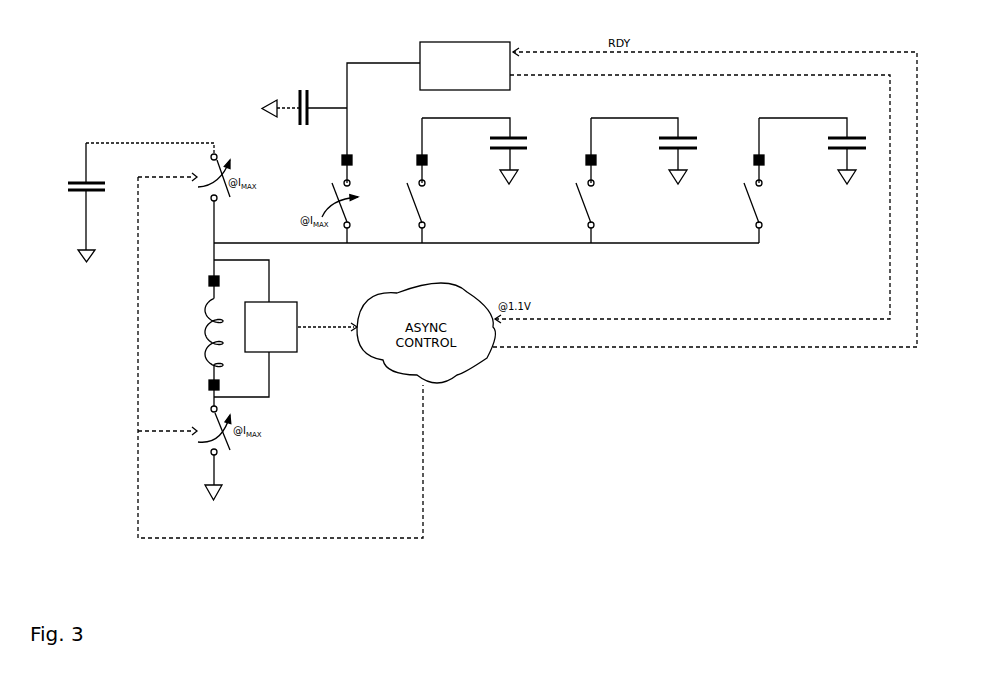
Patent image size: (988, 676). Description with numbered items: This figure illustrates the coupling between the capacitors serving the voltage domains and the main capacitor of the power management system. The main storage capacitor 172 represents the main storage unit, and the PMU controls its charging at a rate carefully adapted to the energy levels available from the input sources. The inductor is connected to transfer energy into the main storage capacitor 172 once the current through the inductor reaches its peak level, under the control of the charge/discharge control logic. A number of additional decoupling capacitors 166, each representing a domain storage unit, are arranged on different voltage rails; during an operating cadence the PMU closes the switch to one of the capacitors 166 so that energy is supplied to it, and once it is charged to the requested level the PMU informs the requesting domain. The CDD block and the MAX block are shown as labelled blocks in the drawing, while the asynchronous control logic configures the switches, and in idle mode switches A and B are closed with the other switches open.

The capacitors 166 is at (523, 127).
The main storage capacitor 172 is at (99, 170).
The CDD block CDD is at (465, 66).
The MAX block MAX is at (271, 327).